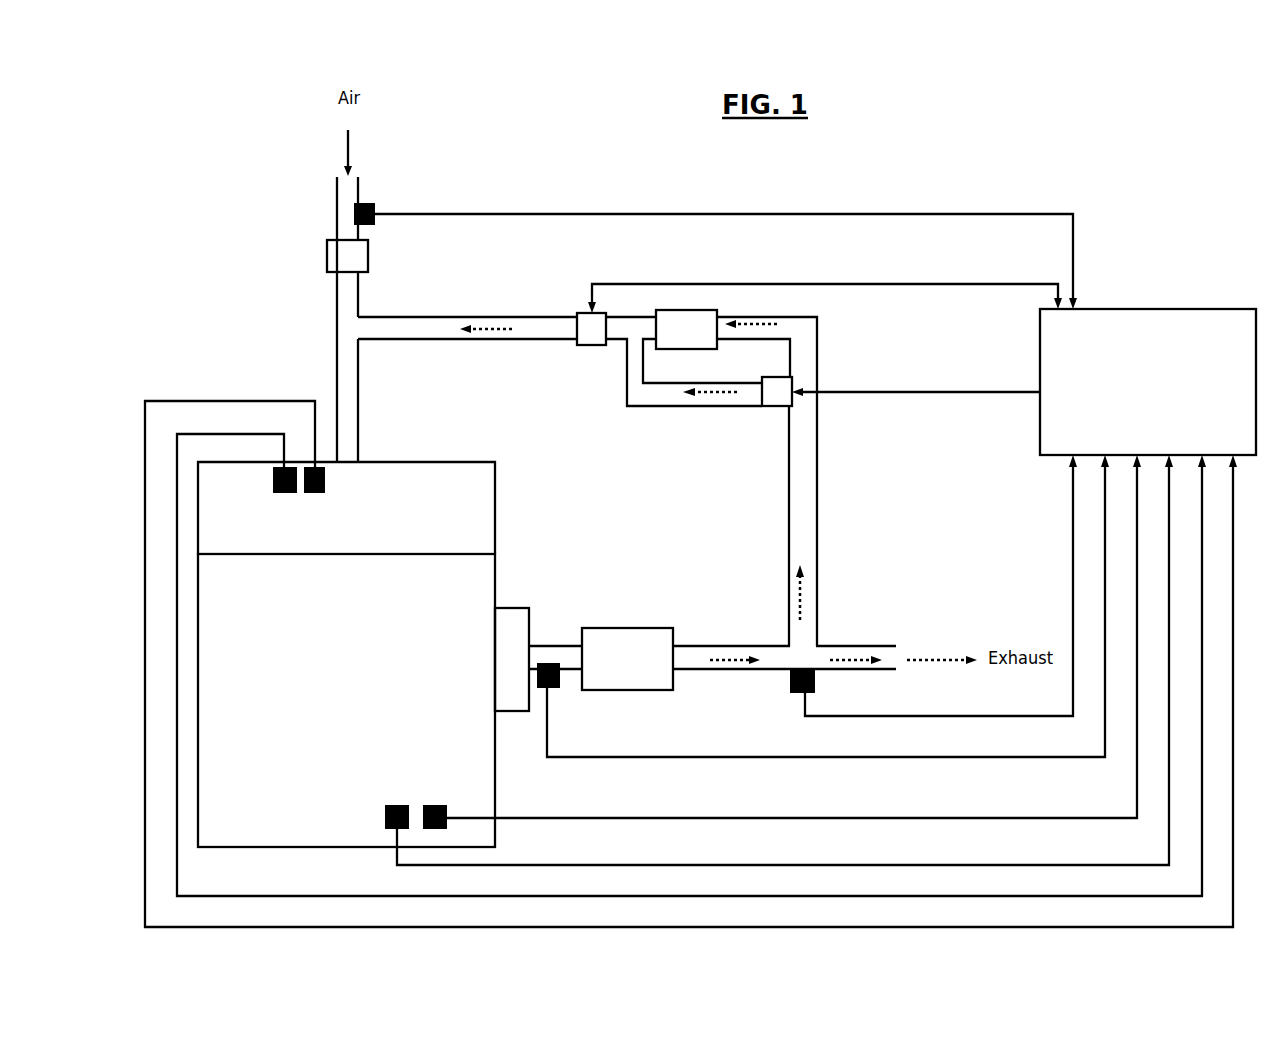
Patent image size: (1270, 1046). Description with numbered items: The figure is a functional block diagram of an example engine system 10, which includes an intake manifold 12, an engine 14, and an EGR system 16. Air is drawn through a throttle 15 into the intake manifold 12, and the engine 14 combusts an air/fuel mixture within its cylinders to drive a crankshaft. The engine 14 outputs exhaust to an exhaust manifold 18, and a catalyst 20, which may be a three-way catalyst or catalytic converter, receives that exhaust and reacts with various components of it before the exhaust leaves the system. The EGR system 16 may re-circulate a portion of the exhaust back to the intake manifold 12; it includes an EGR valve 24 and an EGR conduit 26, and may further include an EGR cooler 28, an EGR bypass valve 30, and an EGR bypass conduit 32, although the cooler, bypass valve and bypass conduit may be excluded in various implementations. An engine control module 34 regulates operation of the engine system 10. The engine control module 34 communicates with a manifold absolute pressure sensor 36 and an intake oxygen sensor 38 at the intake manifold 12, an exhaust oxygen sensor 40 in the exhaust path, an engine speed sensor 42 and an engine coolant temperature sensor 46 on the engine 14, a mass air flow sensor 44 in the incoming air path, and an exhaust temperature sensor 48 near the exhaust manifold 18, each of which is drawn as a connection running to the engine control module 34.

The engine system 10 is at (222, 120).
The intake manifold 12 is at (418, 462).
The engine 14 is at (495, 768).
The throttle 15 is at (327, 258).
The EGR system 16 is at (546, 295).
The exhaust manifold 18 is at (511, 608).
The catalyst 20 is at (627, 628).
The EGR valve 24 is at (590, 345).
The EGR conduit 26 is at (752, 339).
The EGR cooler 28 is at (688, 349).
The EGR bypass valve 30 is at (778, 406).
The EGR bypass conduit 32 is at (706, 406).
The engine control module 34 is at (1185, 309).
The manifold absolute pressure sensor 36 is at (273, 485).
The intake oxygen sensor 38 is at (326, 480).
The exhaust oxygen sensor 40 is at (790, 690).
The engine speed sensor 42 is at (436, 805).
The mass air flow sensor 44 is at (372, 203).
The engine coolant temperature sensor 46 is at (397, 805).
The exhaust temperature sensor 48 is at (556, 688).